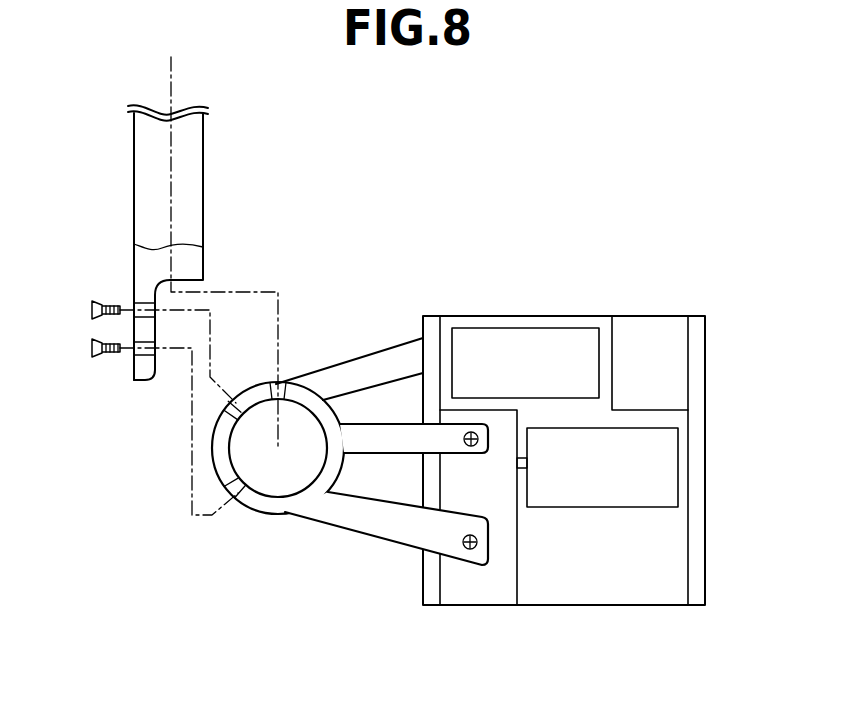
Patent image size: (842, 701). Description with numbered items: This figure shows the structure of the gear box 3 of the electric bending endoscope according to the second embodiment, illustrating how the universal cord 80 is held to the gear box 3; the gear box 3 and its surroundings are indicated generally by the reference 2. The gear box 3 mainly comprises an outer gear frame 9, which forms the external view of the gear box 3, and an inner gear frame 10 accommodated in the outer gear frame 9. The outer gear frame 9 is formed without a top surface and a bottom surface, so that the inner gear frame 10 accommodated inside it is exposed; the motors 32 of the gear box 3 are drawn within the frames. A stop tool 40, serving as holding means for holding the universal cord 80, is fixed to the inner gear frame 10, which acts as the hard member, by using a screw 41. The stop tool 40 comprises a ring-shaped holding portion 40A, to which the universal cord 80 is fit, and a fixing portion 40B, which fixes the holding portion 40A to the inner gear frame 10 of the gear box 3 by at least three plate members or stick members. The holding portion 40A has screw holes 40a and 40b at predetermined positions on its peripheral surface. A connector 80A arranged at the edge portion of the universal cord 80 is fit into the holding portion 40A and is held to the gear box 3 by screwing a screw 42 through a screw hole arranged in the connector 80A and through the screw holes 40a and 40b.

The drive unit 2 is at (600, 290).
The gear box 3 is at (650, 316).
The outer gear frame 9 is at (700, 342).
The inner gear frame 10 is at (665, 390).
The motor 32 is at (503, 340).
The stop tool 40 is at (338, 461).
The holding portion 40A is at (278, 515).
The fixing portion 40B is at (378, 360).
The screw hole 40a is at (230, 402).
The screw hole 40b is at (236, 498).
The screw 41 is at (477, 450).
The screw 42 is at (97, 360).
The universal cord 80 is at (152, 157).
The connector 80A is at (147, 262).